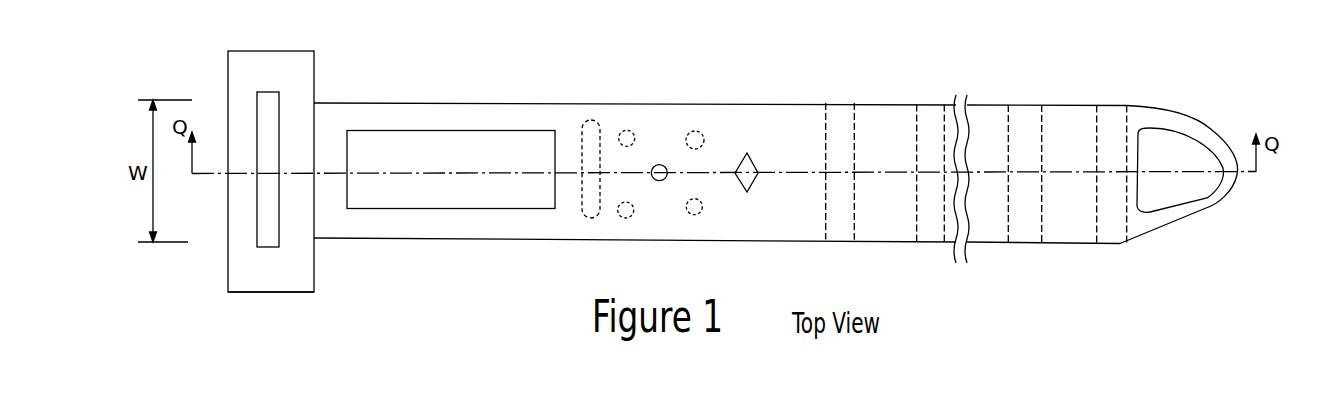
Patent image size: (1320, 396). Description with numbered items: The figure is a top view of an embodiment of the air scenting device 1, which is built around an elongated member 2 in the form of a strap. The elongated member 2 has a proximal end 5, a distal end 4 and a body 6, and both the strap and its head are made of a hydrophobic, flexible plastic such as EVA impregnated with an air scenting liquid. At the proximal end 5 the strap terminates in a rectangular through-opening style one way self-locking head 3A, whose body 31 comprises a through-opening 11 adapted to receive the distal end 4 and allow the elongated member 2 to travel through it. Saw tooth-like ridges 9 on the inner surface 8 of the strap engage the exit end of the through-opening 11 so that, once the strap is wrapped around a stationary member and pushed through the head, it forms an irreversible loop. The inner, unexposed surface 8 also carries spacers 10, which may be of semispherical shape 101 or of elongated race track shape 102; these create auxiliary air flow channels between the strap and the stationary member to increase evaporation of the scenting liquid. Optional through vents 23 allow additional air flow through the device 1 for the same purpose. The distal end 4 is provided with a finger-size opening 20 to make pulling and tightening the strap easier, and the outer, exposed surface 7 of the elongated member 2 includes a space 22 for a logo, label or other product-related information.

The air scenting device 1 is at (898, 37).
The elongated member 2 is at (1053, 118).
The one way self-locking head 3A is at (303, 83).
The distal end 4 is at (1163, 123).
The proximal end 5 is at (332, 230).
The body of elongated member 6 is at (710, 117).
The outer surface 7 is at (990, 117).
The inner surface 8 is at (1037, 217).
The saw tooth-like ridges 9 is at (932, 115).
The spacers 10 is at (695, 207).
The through-opening 11 is at (267, 135).
The finger-size opening 20 is at (1175, 147).
The space for logo or label 22 is at (477, 145).
The vents 23 is at (660, 172).
The body of one way self-locking head 31 is at (285, 287).
The semispherical shape spacers 101 is at (627, 138).
The race track shape spacers 102 is at (578, 220).